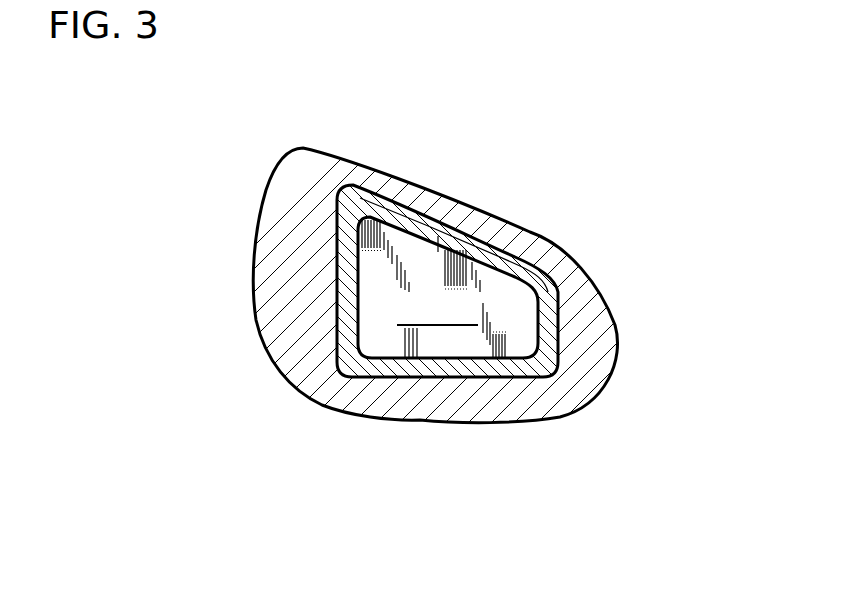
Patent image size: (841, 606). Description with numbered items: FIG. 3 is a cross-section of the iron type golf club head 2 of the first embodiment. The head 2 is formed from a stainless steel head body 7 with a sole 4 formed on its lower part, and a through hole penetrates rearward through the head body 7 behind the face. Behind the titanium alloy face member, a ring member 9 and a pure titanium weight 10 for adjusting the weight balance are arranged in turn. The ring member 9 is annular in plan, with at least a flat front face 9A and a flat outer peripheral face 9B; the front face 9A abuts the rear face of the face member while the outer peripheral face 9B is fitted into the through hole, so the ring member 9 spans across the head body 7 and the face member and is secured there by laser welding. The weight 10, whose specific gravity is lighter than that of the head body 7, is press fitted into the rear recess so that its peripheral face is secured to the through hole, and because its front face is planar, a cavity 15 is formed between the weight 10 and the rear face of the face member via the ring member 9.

The head 2 is at (535, 178).
The sole 4 is at (428, 423).
The head body 7 is at (617, 359).
The ring member 9 is at (520, 238).
The front face 9A is at (448, 287).
The outer peripheral face 9B is at (558, 251).
The weight 10 is at (437, 311).
The cavity 15 is at (405, 247).